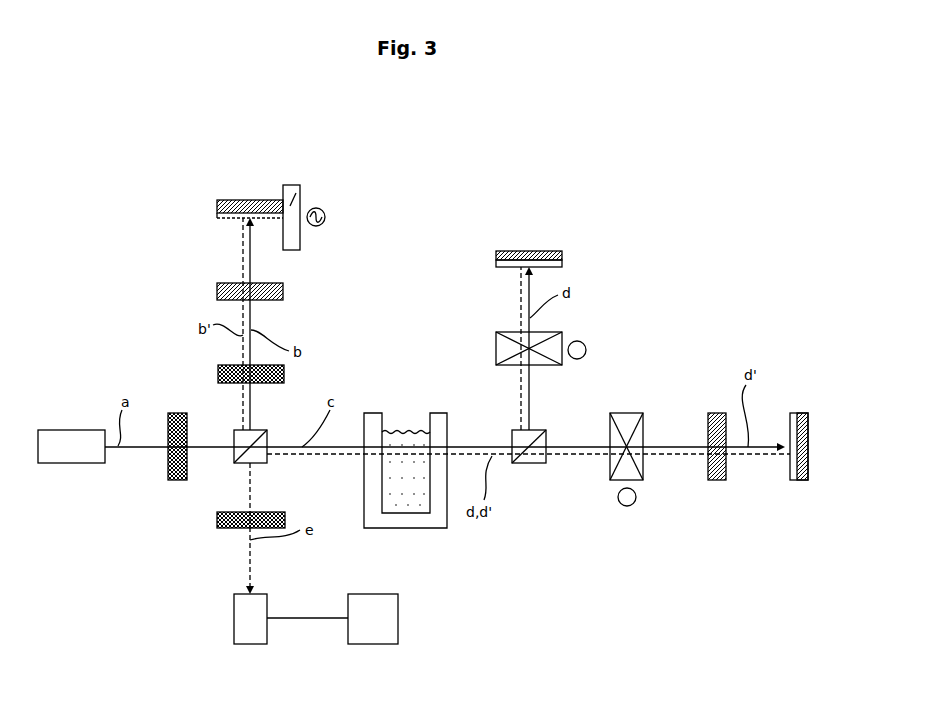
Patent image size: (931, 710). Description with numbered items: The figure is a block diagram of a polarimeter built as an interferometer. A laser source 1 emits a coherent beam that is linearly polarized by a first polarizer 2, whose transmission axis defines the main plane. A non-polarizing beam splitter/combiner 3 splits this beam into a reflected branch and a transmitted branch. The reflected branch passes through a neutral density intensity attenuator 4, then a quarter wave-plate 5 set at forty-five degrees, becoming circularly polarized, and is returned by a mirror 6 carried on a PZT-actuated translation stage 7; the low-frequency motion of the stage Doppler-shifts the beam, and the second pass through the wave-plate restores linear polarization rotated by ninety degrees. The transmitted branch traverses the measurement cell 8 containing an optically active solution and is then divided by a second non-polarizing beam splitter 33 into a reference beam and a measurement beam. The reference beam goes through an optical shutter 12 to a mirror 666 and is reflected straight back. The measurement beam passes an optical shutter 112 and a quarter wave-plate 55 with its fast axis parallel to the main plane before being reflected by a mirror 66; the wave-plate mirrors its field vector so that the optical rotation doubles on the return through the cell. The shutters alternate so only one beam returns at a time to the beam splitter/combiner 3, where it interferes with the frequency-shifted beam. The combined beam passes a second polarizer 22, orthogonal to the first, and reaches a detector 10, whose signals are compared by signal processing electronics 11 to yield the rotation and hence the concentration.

The laser source 1 is at (64, 452).
The polarizer 2 is at (172, 474).
The 50:50 non-polarizing beam splitter/combiner 3 is at (240, 432).
The neutral density intensity attenuator 4 is at (284, 367).
The quarter λ wave-plate 5 is at (217, 292).
The mirror 6 is at (217, 215).
The PZT-actuated translation stage 7 is at (298, 194).
The measurement cell 8 is at (438, 515).
The detector 10 is at (236, 627).
The signal processing electronics 11 is at (356, 638).
The optical shutter 12 is at (512, 350).
The polarizer 22 is at (237, 528).
The 50:50 non-polarizing beam splitter 33 is at (537, 465).
The quarter λ wave-plate 55 is at (708, 420).
The mirror 66 is at (808, 430).
The optical shutter 112 is at (623, 412).
The mirror 666 is at (496, 262).